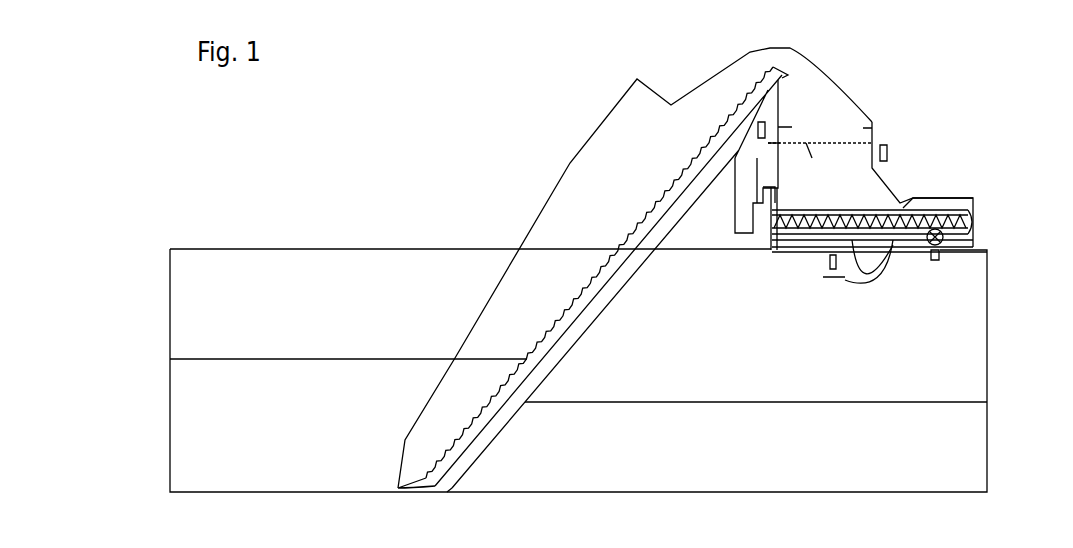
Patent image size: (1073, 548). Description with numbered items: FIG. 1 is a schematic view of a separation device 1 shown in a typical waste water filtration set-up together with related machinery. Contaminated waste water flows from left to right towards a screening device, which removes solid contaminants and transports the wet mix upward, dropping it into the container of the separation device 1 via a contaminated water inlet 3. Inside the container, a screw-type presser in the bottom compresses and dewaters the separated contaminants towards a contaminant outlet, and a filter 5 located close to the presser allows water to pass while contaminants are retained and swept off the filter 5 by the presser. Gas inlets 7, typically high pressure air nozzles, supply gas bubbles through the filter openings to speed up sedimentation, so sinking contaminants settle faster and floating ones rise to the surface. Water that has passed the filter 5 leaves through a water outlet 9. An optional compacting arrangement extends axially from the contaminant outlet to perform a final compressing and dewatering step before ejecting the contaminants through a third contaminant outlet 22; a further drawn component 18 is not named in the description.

The separation device 1 is at (922, 135).
The contaminated water inlet 3 is at (822, 124).
The filter 5 is at (870, 245).
The gas inlets 7 is at (892, 250).
The water outlet 9 is at (940, 255).
The drive unit 18 is at (950, 185).
The third contaminant outlet 22 is at (975, 228).